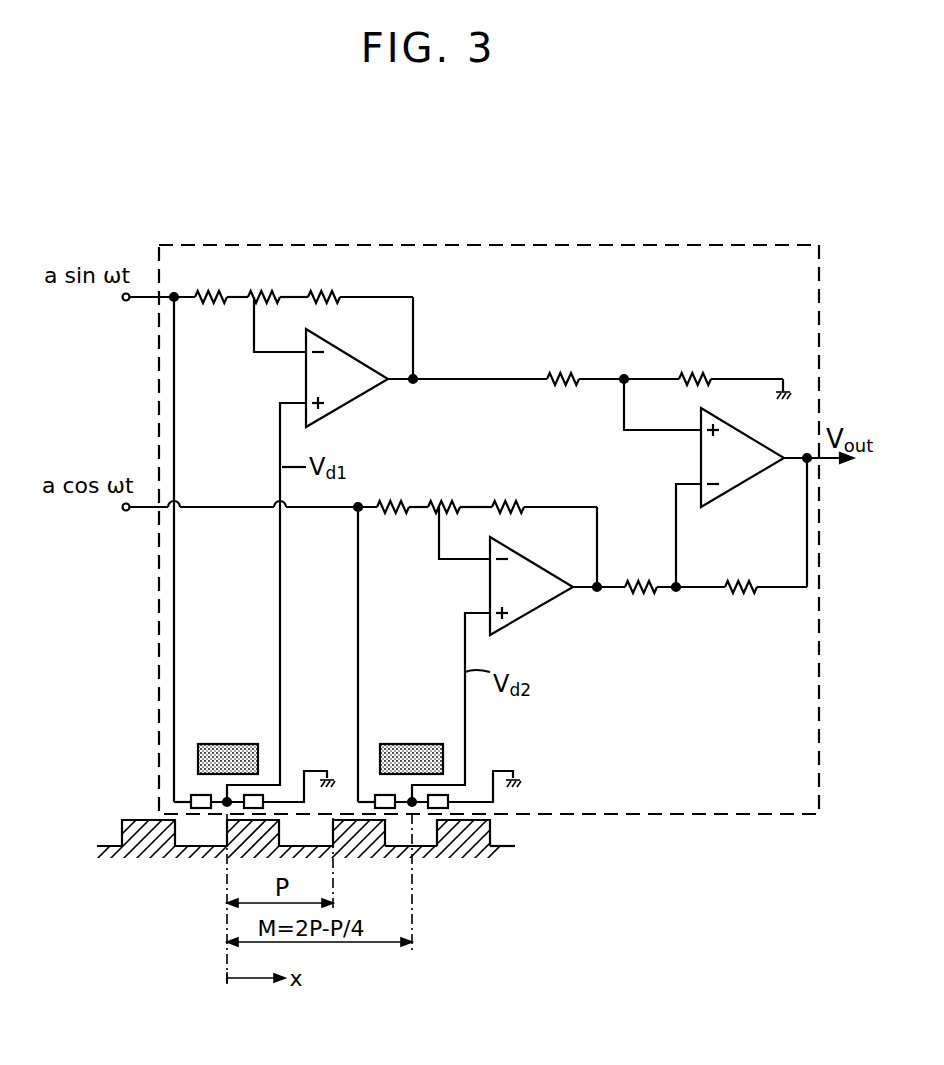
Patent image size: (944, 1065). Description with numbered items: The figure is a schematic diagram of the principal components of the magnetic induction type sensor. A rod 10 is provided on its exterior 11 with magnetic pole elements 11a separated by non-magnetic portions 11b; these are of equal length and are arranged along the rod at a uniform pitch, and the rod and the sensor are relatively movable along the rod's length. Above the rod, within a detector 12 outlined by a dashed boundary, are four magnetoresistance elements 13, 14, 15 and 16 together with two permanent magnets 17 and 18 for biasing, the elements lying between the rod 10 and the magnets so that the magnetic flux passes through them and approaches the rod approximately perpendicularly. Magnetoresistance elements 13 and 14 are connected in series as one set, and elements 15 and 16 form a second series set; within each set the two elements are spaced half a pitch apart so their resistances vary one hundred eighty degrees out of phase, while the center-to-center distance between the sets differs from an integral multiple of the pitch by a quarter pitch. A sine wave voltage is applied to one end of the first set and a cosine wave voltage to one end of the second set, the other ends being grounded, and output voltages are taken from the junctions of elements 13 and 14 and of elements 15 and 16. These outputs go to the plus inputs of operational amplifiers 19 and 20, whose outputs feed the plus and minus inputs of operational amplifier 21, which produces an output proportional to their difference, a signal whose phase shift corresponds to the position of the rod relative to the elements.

The rod 10 is at (190, 881).
The exterior of rod 11 is at (522, 835).
The magnetic pole elements 11a is at (465, 835).
The non-magnetic portions 11b is at (398, 833).
The detector 12 is at (443, 245).
The magnetoresistance element 13 is at (197, 795).
The magnetoresistance element 14 is at (255, 795).
The magnetoresistance element 15 is at (380, 795).
The magnetoresistance element 16 is at (445, 795).
The permanent magnet 17 is at (220, 743).
The permanent magnet 18 is at (421, 743).
The operational amplifier 19 is at (363, 397).
The operational amplifier 20 is at (533, 612).
The operational amplifier 21 is at (742, 432).